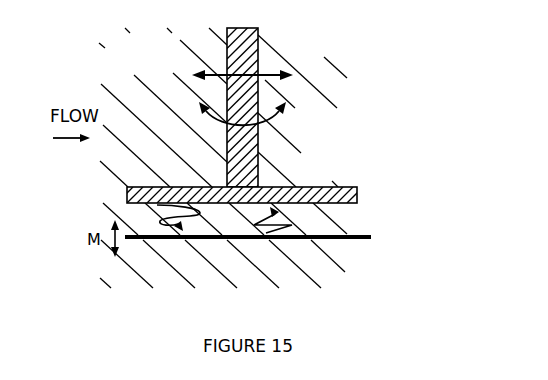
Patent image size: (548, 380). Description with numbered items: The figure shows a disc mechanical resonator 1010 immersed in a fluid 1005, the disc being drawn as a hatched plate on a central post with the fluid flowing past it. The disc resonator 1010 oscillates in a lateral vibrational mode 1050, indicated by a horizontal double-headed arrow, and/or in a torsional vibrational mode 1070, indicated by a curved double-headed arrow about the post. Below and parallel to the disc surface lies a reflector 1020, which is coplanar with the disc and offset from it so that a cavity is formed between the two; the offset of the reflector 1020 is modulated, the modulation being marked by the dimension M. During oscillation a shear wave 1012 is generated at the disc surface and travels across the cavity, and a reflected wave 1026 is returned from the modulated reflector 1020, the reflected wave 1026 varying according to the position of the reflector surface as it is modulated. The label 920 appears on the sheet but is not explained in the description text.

The fluid 1005 is at (160, 63).
The disc resonator 1010 is at (268, 186).
The shear wave 1012 is at (172, 224).
The reflector 1020 is at (360, 240).
The reflected wave 1026 is at (292, 225).
The lateral vibrational mode 1050 is at (271, 73).
The torsional vibrational mode 1070 is at (262, 116).
The substrate 920 is at (412, 289).